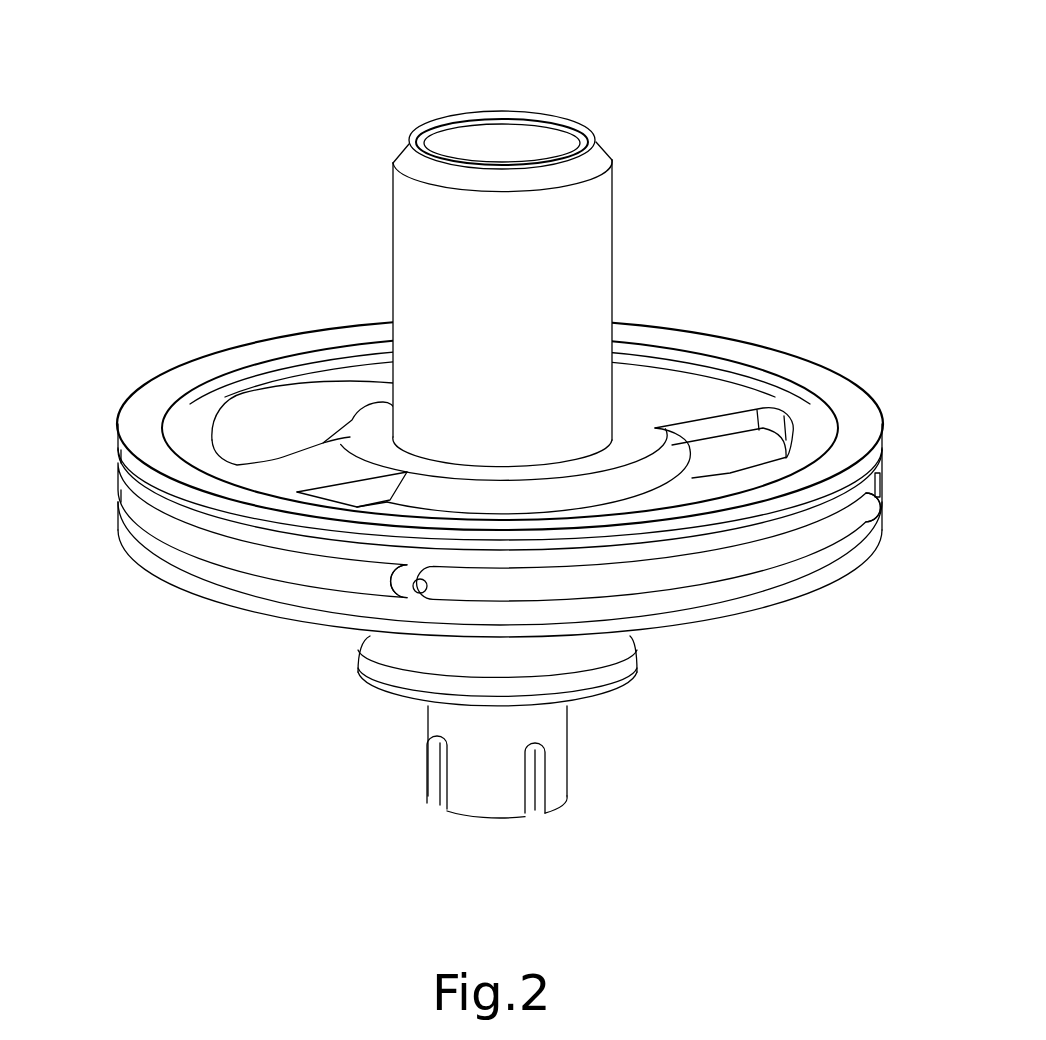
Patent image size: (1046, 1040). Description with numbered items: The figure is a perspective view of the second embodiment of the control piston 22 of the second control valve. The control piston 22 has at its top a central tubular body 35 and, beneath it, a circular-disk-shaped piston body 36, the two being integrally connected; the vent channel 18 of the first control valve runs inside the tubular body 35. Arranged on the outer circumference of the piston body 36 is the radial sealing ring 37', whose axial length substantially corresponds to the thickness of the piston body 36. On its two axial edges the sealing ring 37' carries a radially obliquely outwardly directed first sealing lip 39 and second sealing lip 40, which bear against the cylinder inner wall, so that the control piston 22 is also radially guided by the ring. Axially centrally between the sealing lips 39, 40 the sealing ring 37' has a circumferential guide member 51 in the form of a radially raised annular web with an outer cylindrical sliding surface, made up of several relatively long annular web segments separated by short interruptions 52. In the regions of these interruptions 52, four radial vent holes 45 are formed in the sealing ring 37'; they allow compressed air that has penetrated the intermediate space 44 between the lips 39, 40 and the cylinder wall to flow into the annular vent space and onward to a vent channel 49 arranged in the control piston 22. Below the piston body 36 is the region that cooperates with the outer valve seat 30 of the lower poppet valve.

The control piston 22 is at (230, 142).
The vent channel 18 is at (503, 150).
The central tubular body 35 is at (394, 245).
The piston body 36 is at (800, 418).
The sealing ring 37' is at (500, 359).
The first sealing lip 39 is at (117, 440).
The second sealing lip 40 is at (770, 597).
The intermediate space 44 is at (807, 575).
The radial vent holes 45 is at (880, 473).
The circumferential guide member 51 is at (178, 530).
The interruptions 52 is at (428, 600).
The vent channel 49 is at (380, 703).
The outer valve seat 30 is at (604, 688).